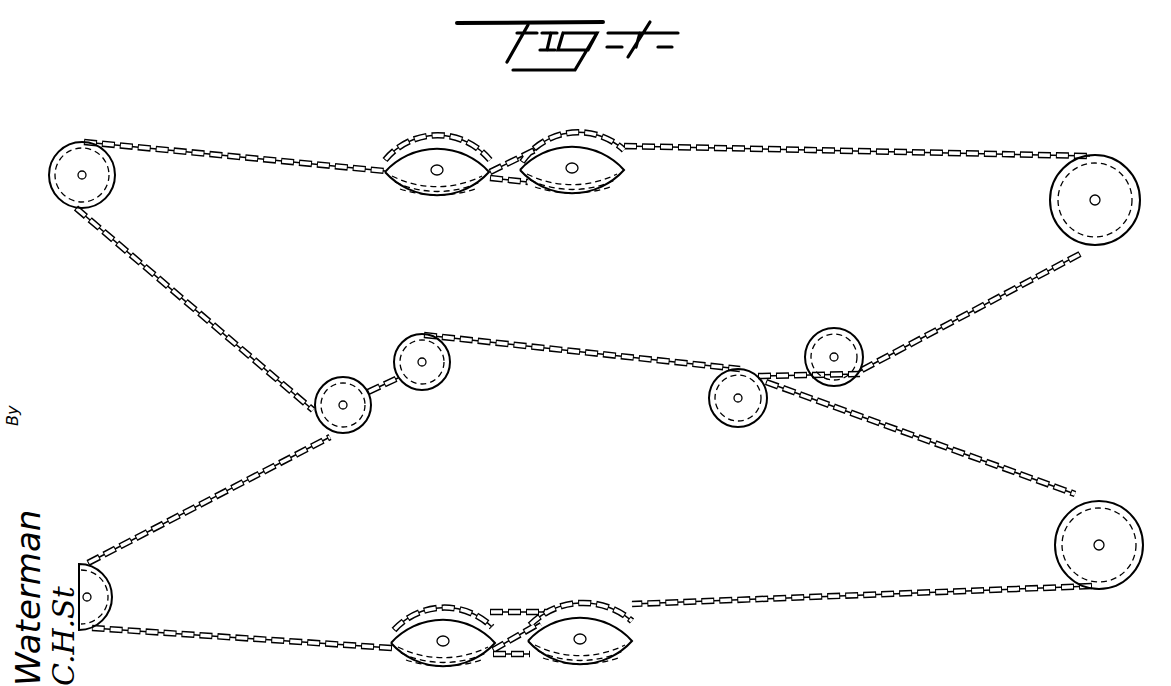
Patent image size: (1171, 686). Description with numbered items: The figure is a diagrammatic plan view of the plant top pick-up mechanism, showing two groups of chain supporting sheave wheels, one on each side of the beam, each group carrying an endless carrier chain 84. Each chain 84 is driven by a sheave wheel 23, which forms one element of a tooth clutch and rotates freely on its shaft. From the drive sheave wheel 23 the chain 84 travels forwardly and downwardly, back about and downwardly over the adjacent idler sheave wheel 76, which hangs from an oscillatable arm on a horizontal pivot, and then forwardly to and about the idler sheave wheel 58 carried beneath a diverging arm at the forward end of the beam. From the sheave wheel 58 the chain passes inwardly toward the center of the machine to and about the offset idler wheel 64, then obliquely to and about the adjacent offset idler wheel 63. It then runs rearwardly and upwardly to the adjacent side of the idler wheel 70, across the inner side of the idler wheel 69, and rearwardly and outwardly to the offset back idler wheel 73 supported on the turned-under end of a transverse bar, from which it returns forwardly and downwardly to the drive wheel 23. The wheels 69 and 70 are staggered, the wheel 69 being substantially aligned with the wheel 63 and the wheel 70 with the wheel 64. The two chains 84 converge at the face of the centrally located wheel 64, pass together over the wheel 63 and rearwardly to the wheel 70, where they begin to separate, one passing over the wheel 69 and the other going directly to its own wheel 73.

The sheave wheel 23 is at (462, 185).
The sheave wheel 58 is at (95, 187).
The offset sheave wheel 63 is at (427, 335).
The offset sheave wheel 64 is at (338, 380).
The sheave wheel 69 is at (840, 333).
The sheave wheel 70 is at (740, 377).
The sheave wheel 73 is at (1095, 162).
The sheave wheel 76 is at (604, 182).
The endless carrier chain 84 is at (972, 152).